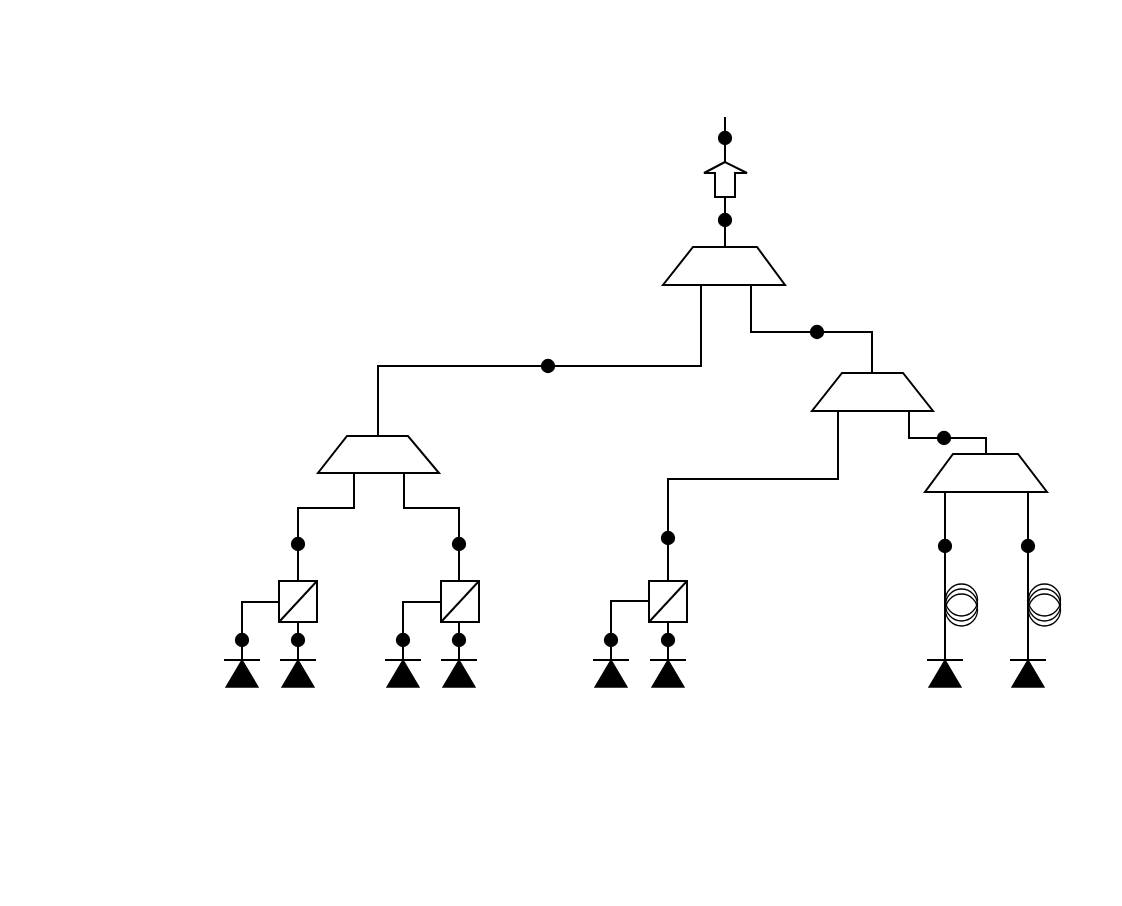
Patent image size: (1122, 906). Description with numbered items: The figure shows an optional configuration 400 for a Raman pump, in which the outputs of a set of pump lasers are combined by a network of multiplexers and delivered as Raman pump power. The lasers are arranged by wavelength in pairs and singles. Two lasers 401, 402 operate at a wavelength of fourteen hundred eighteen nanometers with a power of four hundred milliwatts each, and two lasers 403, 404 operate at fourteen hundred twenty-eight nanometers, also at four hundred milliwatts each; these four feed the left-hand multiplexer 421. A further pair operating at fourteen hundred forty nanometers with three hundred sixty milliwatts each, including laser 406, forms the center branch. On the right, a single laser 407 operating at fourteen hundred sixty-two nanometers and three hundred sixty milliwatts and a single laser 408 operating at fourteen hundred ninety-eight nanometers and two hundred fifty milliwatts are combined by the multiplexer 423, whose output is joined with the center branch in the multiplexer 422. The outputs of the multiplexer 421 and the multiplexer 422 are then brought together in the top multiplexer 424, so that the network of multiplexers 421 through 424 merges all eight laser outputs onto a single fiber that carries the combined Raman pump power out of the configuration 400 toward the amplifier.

The optional configuration for Raman pump 400 is at (746, 77).
The laser 401 is at (235, 688).
The laser 402 is at (292, 688).
The laser 403 is at (398, 688).
The laser 404 is at (455, 688).
The laser 406 is at (666, 688).
The laser 407 is at (947, 688).
The laser 408 is at (1030, 688).
The multiplexer 421 is at (423, 452).
The multiplexer 422 is at (918, 390).
The multiplexer 423 is at (1036, 473).
The multiplexer 424 is at (775, 268).